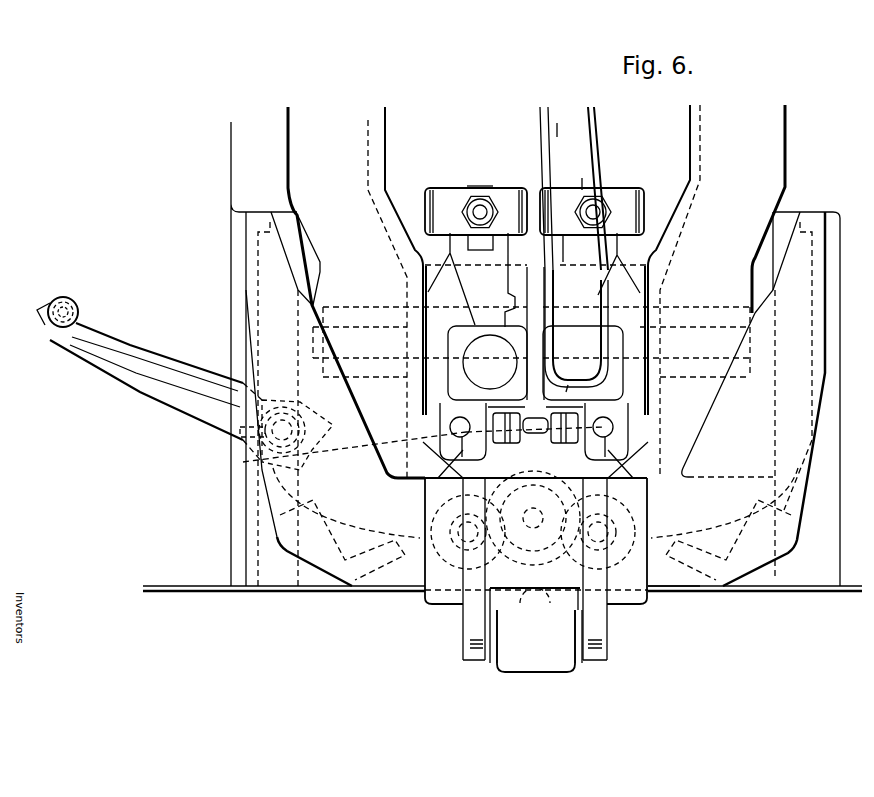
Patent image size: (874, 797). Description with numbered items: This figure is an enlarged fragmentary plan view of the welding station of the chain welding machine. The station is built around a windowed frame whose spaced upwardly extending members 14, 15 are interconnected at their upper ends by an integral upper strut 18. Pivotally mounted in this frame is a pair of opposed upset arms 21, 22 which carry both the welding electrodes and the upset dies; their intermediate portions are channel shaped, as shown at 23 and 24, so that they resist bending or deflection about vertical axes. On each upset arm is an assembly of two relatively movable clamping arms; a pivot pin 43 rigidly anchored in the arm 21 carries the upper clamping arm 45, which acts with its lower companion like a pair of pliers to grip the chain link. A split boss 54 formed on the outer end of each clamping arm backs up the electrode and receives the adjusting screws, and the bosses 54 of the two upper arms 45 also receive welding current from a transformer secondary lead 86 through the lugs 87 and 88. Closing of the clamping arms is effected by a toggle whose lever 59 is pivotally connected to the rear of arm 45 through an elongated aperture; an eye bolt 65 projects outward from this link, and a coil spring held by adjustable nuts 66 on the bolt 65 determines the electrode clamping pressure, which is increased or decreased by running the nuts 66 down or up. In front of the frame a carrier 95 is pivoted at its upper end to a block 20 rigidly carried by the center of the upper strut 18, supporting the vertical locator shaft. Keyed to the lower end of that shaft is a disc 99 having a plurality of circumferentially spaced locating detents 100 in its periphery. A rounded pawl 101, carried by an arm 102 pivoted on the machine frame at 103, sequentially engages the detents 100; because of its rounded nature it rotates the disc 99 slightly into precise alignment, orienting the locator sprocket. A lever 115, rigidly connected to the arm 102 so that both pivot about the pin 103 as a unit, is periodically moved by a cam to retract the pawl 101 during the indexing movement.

The upwardly extending member 14 is at (325, 572).
The upwardly extending member 15 is at (735, 570).
The upper strut 18 is at (657, 575).
The block 20 is at (438, 604).
The upset arm 21 is at (398, 193).
The upset arm 22 is at (799, 196).
The channel shaped intermediate portion 23 is at (358, 143).
The channel shaped intermediate portion 24 is at (778, 121).
The pivot pin 43 is at (318, 345).
The upper clamping arm 45 is at (447, 288).
The split boss 54 is at (480, 446).
The lever 59 is at (512, 192).
The eye bolt 65 is at (476, 205).
The adjustable nuts 66 is at (484, 197).
The secondary terminal lead 86 is at (577, 133).
The lug 87 is at (450, 330).
The lug 88 is at (637, 309).
The carrier 95 is at (547, 663).
The disc 99 is at (492, 594).
The locating detents 100 is at (408, 592).
The rounded pawl 101 is at (568, 385).
The arm 102 is at (350, 445).
The pivot 103 is at (245, 450).
The lever 115 is at (139, 379).